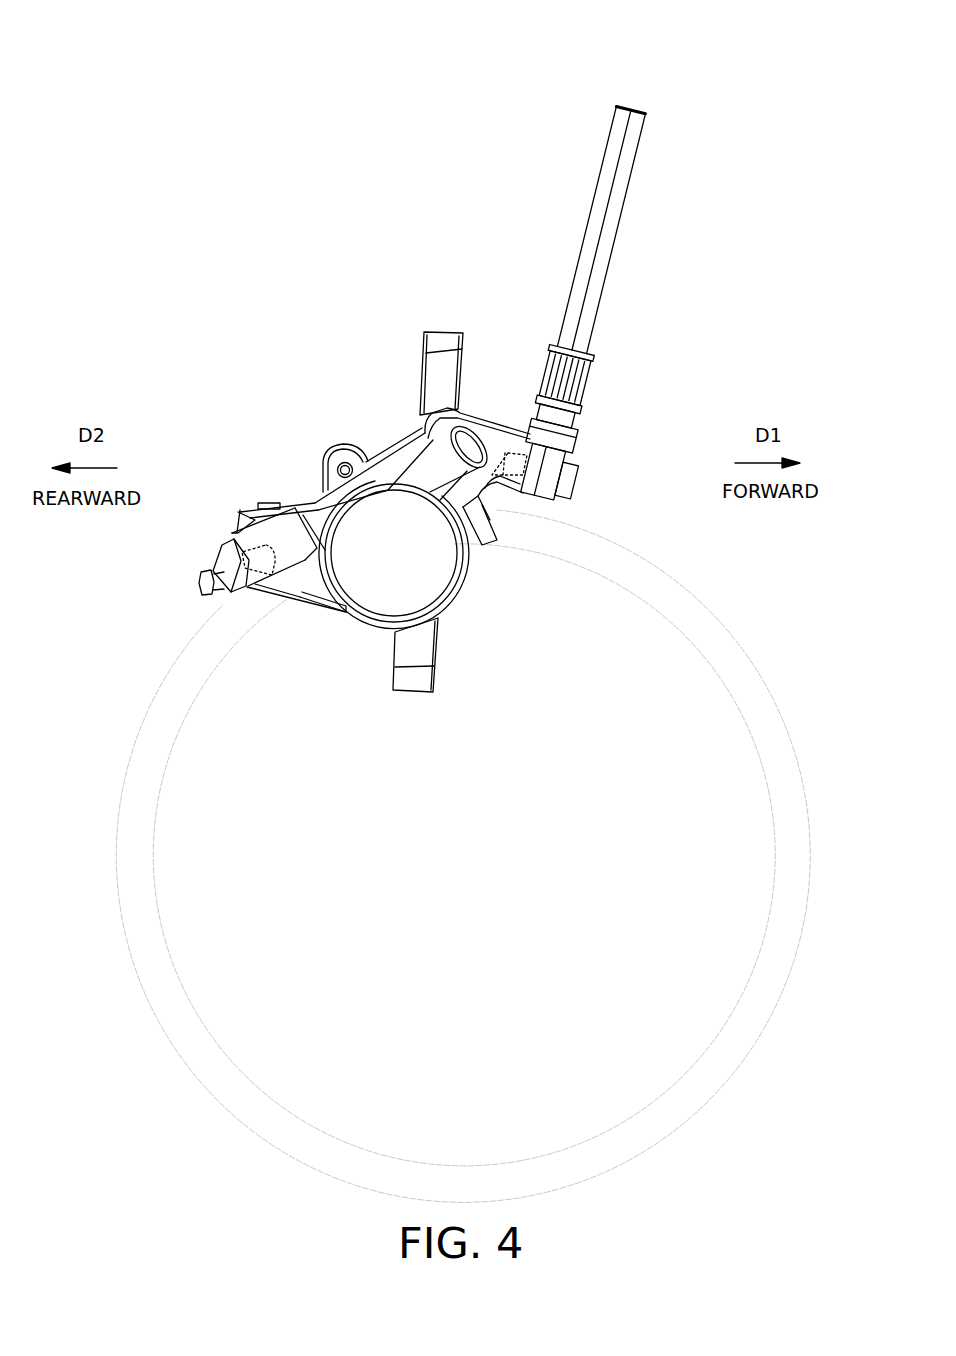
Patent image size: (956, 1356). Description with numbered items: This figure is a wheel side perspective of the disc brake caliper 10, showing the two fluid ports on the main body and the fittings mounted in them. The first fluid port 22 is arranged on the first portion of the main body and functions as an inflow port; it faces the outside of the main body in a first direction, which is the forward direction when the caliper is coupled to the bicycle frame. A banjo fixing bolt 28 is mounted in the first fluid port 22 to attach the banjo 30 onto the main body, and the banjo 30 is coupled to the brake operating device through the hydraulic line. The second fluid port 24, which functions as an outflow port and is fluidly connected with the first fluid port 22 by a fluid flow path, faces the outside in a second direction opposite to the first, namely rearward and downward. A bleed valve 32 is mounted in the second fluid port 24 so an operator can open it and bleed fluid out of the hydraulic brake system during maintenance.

The bicycle operating device 10 is at (469, 46).
The first fluid port 22 is at (513, 440).
The second fluid port 24 is at (266, 545).
The banjo fixing bolt 28 is at (576, 475).
The banjo 30 is at (545, 465).
The bleed valve 32 is at (215, 553).